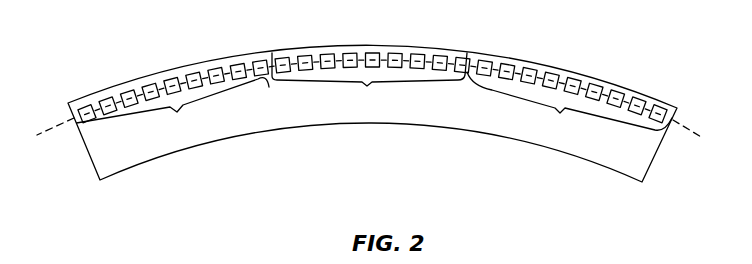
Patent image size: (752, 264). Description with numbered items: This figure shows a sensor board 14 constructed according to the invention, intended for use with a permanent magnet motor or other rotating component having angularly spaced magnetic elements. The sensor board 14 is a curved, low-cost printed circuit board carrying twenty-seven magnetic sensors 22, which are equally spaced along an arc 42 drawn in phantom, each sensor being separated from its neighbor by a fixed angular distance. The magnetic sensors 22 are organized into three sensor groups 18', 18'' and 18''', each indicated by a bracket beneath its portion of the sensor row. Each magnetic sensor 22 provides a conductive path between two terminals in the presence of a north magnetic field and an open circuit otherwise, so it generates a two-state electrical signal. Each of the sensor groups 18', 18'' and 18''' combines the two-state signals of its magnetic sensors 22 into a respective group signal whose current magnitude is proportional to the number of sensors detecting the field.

The sensor board 14 is at (464, 126).
The first sensor group 18' is at (173, 136).
The second sensor group 18'' is at (369, 110).
The third sensor group 18''' is at (569, 135).
The magnetic sensor 22 is at (137, 58).
The arc 42 is at (684, 120).